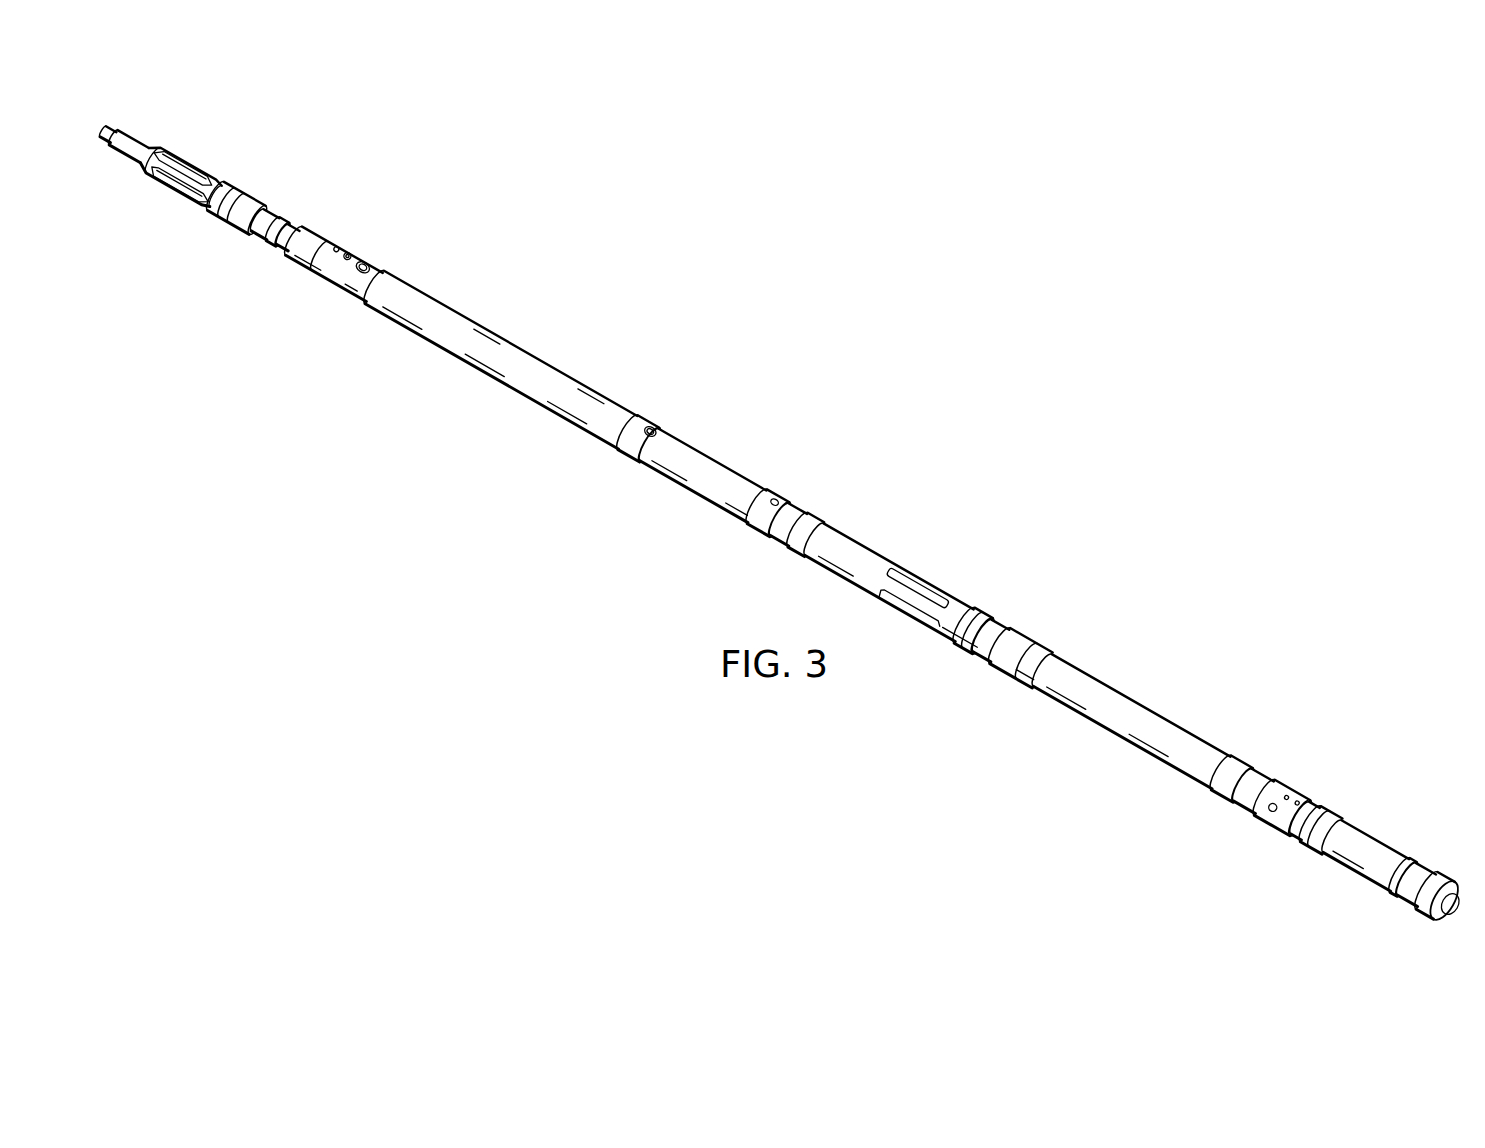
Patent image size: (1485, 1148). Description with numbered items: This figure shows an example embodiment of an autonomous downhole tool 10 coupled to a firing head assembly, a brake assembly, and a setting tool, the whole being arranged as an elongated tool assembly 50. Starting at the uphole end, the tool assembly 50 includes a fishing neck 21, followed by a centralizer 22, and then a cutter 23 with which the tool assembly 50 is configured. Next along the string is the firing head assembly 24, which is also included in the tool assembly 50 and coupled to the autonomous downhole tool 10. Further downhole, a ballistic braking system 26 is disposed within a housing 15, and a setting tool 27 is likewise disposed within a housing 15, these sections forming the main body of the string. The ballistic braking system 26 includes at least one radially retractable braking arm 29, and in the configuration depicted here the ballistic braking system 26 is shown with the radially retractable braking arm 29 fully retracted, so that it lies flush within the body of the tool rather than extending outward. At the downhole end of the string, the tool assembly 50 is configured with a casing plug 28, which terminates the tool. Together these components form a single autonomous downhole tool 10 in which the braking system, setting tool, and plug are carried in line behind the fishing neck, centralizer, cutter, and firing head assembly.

The tool body 10 is at (537, 352).
The housing 15 is at (716, 455).
The fishing neck 21 is at (112, 127).
The centralizer 22 is at (186, 152).
The cutter 23 is at (232, 177).
The firing head assembly 24 is at (297, 226).
The ballistic braking system 26 is at (856, 536).
The setting tool 27 is at (1150, 709).
The casing plug 28 is at (1392, 849).
The radially retractable braking arm 29 is at (920, 580).
The tool assembly 50 is at (782, 496).